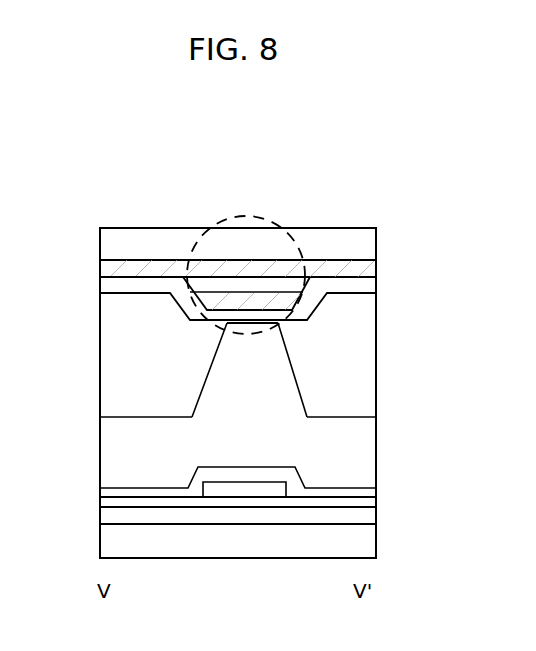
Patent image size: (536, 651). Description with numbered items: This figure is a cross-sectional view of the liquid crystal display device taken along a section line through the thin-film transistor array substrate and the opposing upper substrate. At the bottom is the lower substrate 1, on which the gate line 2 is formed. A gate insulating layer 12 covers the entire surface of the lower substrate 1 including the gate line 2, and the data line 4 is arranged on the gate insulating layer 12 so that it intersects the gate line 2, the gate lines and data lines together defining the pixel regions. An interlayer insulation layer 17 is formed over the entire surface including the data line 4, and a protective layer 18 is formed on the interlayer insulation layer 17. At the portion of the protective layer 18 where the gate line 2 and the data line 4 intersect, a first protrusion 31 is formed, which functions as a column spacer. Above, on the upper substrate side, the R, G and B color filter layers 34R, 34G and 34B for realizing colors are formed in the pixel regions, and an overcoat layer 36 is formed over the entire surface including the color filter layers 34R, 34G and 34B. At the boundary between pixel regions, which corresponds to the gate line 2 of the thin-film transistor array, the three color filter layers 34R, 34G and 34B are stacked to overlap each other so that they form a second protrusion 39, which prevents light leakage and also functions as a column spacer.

The lower substrate 1 is at (108, 541).
The gate line 2 is at (187, 515).
The data line 4 is at (218, 492).
The gate insulating layer 12 is at (257, 505).
The interlayer insulation layer 17 is at (106, 493).
The protective layer 18 is at (118, 452).
The first protrusion 31 is at (228, 368).
The R color filter layer 34R is at (195, 270).
The B color filter layer 34B is at (243, 303).
The G color filter layer 34G is at (292, 287).
The overcoat layer 36 is at (109, 283).
The second protrusion 39 is at (300, 232).